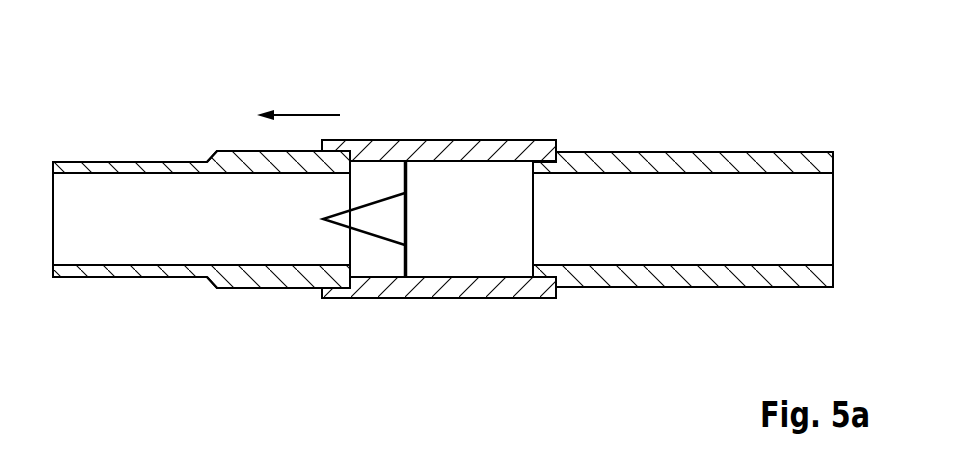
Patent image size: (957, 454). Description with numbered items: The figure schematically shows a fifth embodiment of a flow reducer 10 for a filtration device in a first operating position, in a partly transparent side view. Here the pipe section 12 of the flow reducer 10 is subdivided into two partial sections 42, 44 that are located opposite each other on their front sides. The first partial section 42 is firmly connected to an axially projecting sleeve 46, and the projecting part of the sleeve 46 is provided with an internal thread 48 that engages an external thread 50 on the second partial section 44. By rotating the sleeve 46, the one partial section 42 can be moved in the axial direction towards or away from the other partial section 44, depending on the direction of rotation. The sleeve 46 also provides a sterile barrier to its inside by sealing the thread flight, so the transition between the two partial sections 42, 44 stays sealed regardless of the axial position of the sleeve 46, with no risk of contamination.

The flow reducer 10 is at (667, 86).
The pipe section 12 is at (576, 299).
The first partial section 42 is at (768, 160).
The second partial section 44 is at (128, 160).
The sleeve 46 is at (510, 157).
The internal thread 48 is at (395, 282).
The external thread 50 is at (265, 282).